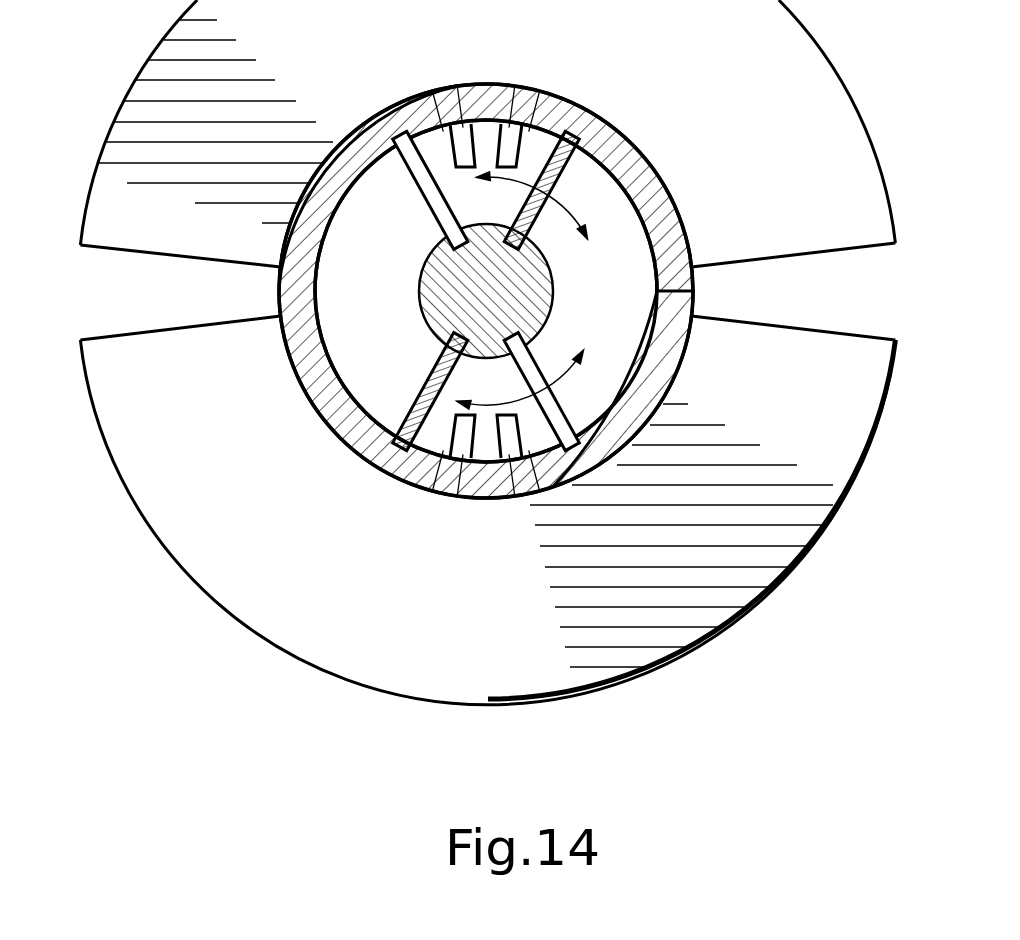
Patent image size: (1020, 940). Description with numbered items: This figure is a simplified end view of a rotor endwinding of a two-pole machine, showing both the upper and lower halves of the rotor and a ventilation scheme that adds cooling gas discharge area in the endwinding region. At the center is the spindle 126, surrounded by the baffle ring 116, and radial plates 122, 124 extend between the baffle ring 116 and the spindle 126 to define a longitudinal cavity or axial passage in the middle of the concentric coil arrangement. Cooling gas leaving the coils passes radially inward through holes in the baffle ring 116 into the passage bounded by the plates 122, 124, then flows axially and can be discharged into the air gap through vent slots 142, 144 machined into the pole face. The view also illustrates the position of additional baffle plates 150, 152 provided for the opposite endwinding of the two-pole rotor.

The baffle ring 116 is at (693, 287).
The radial plate 122 is at (422, 176).
The radial plate 124 is at (620, 186).
The spindle 126 is at (440, 293).
The vent slot 142 is at (460, 86).
The vent slot 144 is at (517, 86).
The baffle plate 150 is at (413, 481).
The baffle plate 152 is at (573, 400).